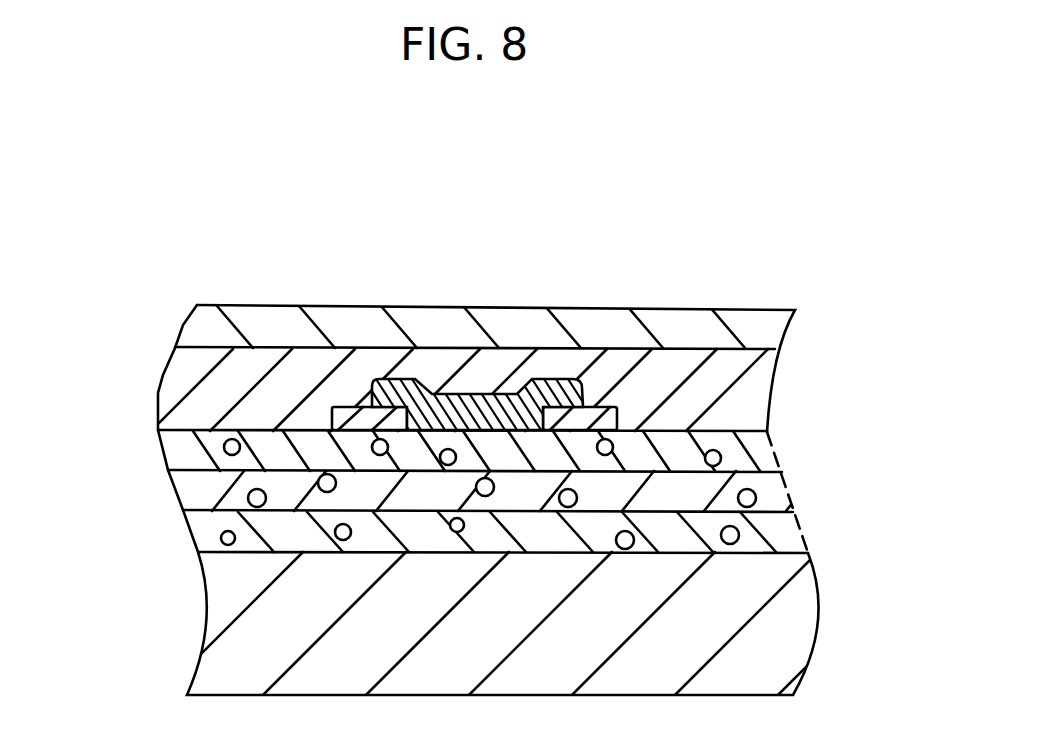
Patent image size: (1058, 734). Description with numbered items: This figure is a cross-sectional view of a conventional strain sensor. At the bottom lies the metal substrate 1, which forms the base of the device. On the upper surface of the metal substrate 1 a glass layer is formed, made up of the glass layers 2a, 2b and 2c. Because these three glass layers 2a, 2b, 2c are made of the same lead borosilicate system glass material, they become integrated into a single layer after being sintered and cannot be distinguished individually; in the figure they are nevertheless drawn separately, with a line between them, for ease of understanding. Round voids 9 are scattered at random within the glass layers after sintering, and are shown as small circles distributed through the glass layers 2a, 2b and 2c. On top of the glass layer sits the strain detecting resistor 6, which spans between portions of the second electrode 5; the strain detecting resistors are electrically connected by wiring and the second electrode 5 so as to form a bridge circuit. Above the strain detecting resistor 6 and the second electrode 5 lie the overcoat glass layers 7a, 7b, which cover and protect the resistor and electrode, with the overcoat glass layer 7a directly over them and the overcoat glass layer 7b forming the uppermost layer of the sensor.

The metal substrate 1 is at (817, 627).
The glass layer 2a is at (803, 537).
The glass layer 2b is at (790, 495).
The glass layer 2c is at (777, 450).
The second electrode 5 is at (362, 405).
The strain detecting resistor 6 is at (465, 393).
The overcoat glass layer 7a is at (158, 390).
The overcoat glass layer 7b is at (185, 325).
The round void 9 is at (337, 533).